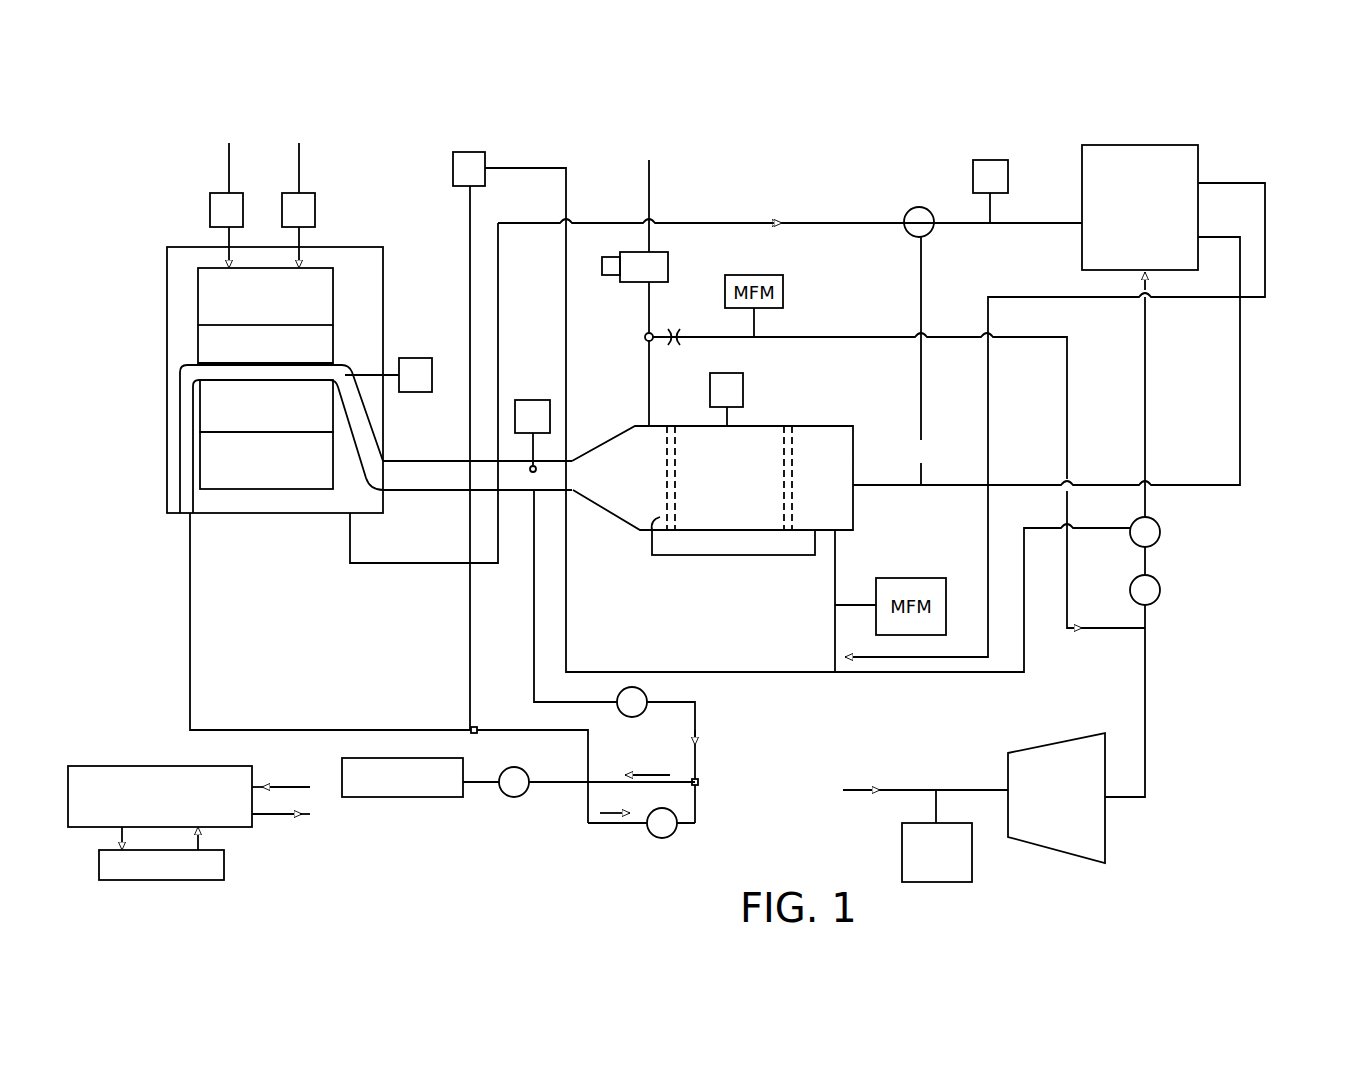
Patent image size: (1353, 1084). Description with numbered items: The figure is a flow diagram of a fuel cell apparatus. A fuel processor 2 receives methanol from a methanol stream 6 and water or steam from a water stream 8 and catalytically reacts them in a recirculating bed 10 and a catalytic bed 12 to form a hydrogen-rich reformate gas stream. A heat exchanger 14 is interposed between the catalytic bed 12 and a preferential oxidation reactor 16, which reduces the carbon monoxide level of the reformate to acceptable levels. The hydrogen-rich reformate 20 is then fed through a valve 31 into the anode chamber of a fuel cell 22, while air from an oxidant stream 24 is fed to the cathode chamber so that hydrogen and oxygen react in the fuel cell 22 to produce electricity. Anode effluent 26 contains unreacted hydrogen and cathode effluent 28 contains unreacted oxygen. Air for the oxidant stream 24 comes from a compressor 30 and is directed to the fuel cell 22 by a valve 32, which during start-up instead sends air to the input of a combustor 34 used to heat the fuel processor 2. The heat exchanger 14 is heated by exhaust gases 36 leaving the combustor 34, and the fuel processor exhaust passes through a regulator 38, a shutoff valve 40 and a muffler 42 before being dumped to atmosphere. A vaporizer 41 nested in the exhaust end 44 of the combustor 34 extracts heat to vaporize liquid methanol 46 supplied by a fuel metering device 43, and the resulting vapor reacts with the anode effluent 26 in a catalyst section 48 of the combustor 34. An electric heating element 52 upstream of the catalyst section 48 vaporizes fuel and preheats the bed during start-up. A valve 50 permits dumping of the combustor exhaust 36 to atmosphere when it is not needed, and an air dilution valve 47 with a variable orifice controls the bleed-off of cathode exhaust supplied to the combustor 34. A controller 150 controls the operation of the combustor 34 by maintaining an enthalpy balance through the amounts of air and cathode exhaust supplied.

The fuel processor 2 is at (255, 380).
The methanol stream 6 is at (229, 170).
The water stream 8 is at (299, 170).
The recirculating bed 10 is at (328, 302).
The catalytic bed 12 is at (325, 341).
The heat exchanger 14 is at (222, 405).
The preferential oxidation (PROX) reactor 16 is at (222, 460).
The hydrogen-rich reformate 20 is at (383, 565).
The fuel cell 22 is at (1128, 248).
The oxidant stream 24 is at (1145, 365).
The anode effluent 26 is at (1240, 273).
The cathode effluent 28 is at (1265, 208).
The compressor 30 is at (1030, 757).
The valve 31 is at (908, 211).
The valve 32 is at (1158, 530).
The combustor 34 is at (762, 426).
The exhaust gases 36 is at (415, 482).
The regulator 38 is at (667, 838).
The shutoff valve / MeOH vapor 40 is at (712, 555).
The vaporizer 41 is at (660, 519).
The muffler / combustor inlet end 42 is at (626, 622).
The fuel metering device 43 is at (668, 262).
The exhaust end 44 is at (612, 497).
The liquid MeOH 46 is at (649, 388).
The air dilution valve 47 is at (480, 152).
The catalyst section 48 is at (738, 520).
The valve 50 is at (640, 715).
The electric heating element 52 is at (795, 505).
The controller 150 is at (147, 766).